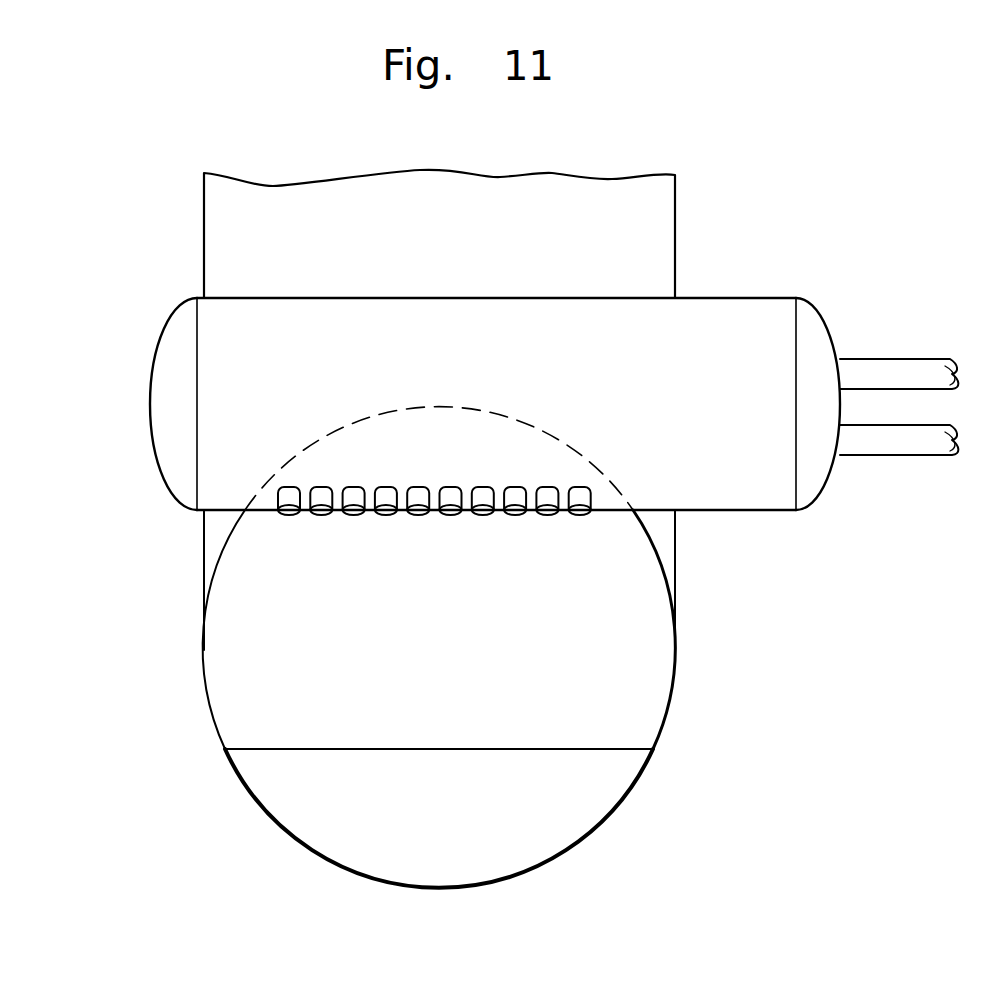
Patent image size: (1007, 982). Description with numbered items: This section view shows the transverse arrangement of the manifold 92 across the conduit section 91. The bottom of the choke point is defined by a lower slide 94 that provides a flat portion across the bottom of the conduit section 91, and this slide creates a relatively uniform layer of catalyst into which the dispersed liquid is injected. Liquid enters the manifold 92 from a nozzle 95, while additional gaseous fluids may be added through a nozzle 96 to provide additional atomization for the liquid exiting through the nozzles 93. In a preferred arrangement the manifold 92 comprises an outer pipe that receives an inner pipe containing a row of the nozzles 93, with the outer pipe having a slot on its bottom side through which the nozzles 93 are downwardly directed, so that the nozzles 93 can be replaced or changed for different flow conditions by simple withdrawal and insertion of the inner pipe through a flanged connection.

The conduit section 91 is at (232, 763).
The manifold 92 is at (652, 298).
The nozzles 93 is at (592, 497).
The lower slide 94 is at (617, 749).
The nozzle 95 is at (940, 360).
The nozzle 96 is at (935, 456).